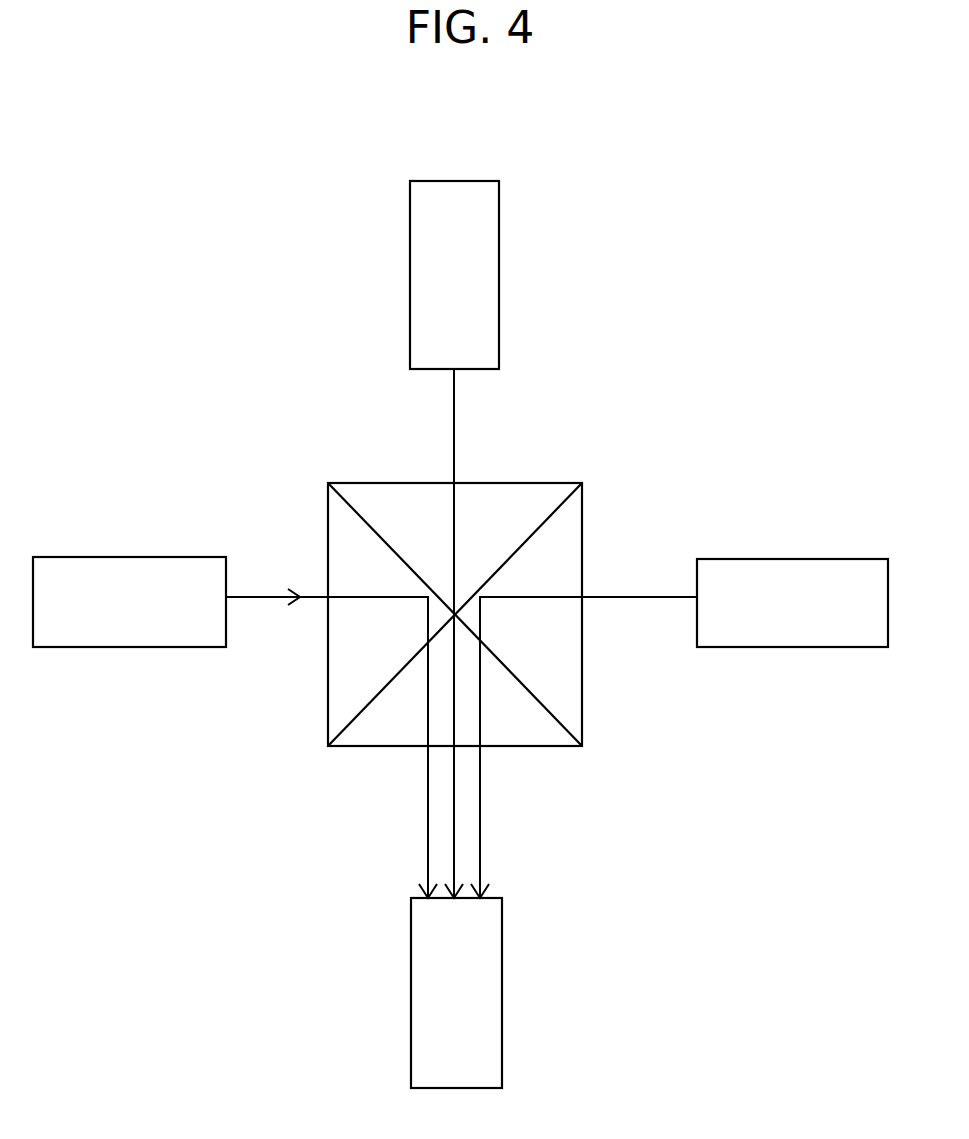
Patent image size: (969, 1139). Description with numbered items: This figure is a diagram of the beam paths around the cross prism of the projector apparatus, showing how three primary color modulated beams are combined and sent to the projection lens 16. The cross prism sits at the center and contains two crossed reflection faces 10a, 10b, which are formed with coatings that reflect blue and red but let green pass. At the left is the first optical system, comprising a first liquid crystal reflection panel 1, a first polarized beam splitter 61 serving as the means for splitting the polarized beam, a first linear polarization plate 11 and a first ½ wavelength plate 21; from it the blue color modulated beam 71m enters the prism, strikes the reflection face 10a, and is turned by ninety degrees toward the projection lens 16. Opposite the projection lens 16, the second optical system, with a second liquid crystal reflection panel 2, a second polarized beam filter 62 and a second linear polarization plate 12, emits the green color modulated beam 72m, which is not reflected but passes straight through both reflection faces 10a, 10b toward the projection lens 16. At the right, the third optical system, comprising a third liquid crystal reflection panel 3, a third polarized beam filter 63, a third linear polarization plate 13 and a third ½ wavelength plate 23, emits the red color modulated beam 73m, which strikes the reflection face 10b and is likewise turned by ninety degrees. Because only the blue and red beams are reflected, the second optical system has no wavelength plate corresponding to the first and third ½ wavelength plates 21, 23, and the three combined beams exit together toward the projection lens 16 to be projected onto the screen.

The first liquid crystal reflection panel 1 is at (129, 602).
The first polarized beam splitter 61 is at (129, 602).
The first linear polarization plate 11 is at (129, 602).
The first ½ wavelength plate 21 is at (129, 602).
The second liquid crystal reflection panel 2 is at (454, 275).
The second polarized beam filter 62 is at (454, 275).
The second linear polarization plate 12 is at (454, 275).
The third liquid crystal reflection panel 3 is at (792, 603).
The third polarized beam filter 63 is at (792, 603).
The third linear polarization plate 13 is at (792, 603).
The third ½ wavelength plate 23 is at (792, 603).
The reflection face 10a is at (340, 497).
The reflection face 10b is at (571, 498).
The projection lens 16 is at (503, 1001).
The blue color modulated beam 71m is at (267, 599).
The green color modulated beam 72m is at (454, 420).
The red color modulated beam 73m is at (648, 596).